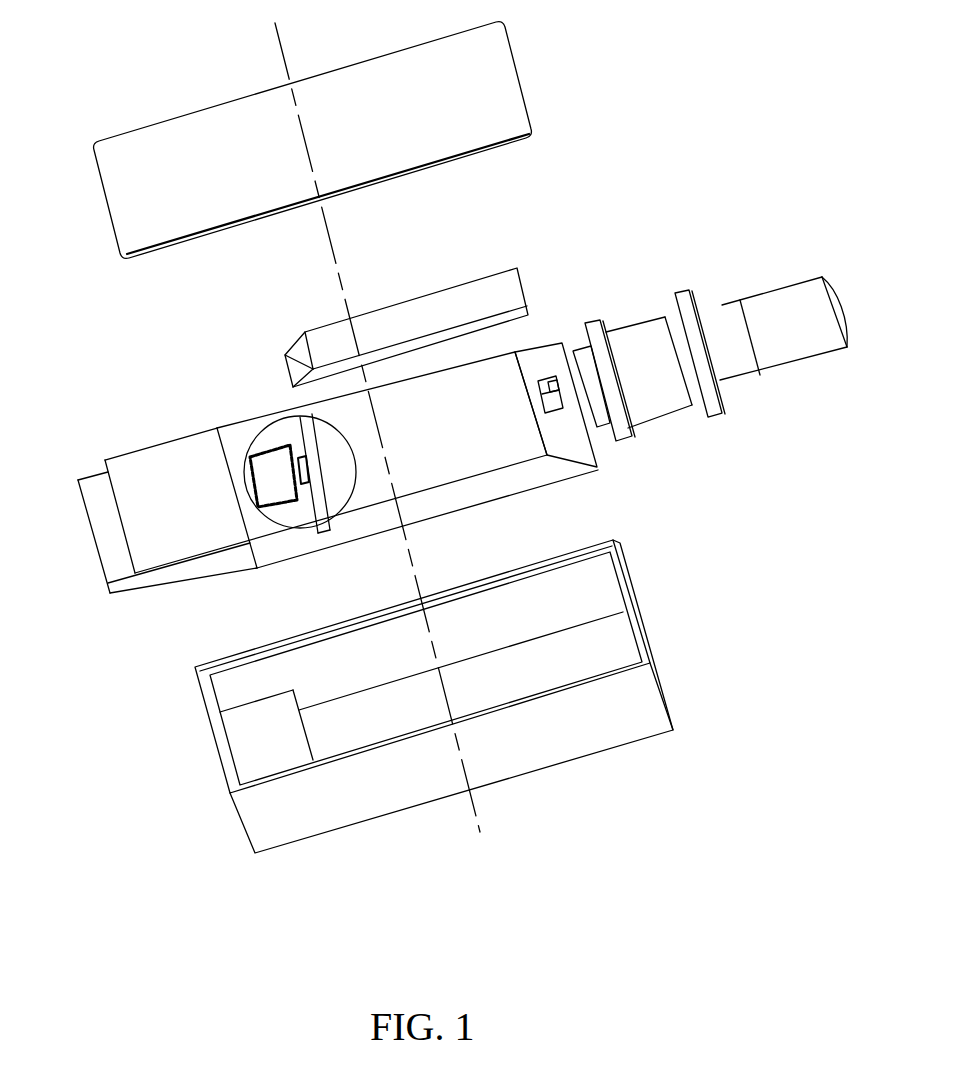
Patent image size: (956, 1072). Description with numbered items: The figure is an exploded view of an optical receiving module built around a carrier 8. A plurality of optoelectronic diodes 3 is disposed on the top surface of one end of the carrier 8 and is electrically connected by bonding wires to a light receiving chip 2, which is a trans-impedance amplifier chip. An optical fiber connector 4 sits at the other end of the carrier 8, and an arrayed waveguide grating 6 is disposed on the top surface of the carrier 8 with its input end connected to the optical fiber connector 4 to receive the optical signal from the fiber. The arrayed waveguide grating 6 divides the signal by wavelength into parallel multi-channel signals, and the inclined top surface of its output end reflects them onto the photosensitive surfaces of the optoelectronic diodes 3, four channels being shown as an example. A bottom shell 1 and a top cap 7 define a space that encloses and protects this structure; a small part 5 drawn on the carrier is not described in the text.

The bottom shell 1 is at (513, 742).
The light receiving chip 2 is at (312, 480).
The optoelectronic diodes 3 is at (260, 425).
The optical fiber connector 4 is at (648, 335).
The clip 5 is at (547, 378).
The arrayed waveguide grating 6 is at (443, 290).
The top cap 7 is at (168, 196).
The carrier 8 is at (457, 476).